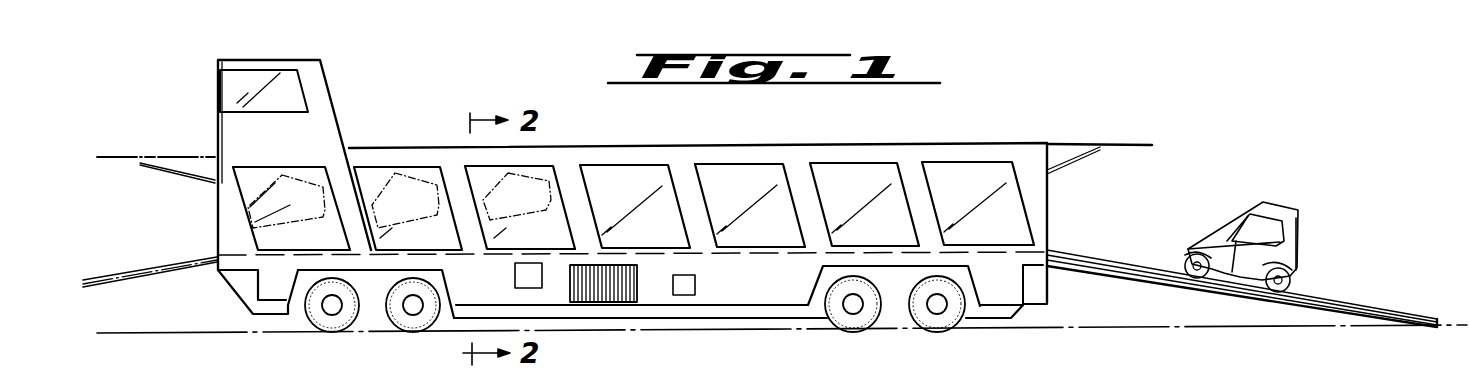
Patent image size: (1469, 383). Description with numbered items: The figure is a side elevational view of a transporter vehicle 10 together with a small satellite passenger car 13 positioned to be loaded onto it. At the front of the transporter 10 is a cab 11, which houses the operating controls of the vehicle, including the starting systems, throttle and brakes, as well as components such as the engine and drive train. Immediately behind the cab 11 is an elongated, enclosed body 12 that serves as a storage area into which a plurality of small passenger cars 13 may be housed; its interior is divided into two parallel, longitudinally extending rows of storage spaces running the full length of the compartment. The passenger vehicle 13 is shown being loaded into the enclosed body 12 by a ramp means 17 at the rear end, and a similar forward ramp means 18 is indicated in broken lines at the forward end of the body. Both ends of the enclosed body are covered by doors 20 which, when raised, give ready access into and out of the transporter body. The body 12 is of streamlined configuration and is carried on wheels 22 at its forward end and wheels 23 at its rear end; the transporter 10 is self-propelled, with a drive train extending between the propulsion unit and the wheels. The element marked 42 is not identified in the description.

The vehicle transport truck 10 is at (768, 138).
The cab 11 is at (228, 131).
The body 12 is at (883, 145).
The small automobile 13 is at (1295, 190).
The rear ramp 17 is at (1118, 263).
The front ramp 18 is at (160, 266).
The rear door flap 20 is at (1108, 140).
The front wheels 22 is at (333, 322).
The rear wheels 23 is at (860, 321).
The chassis frame 42 is at (620, 326).